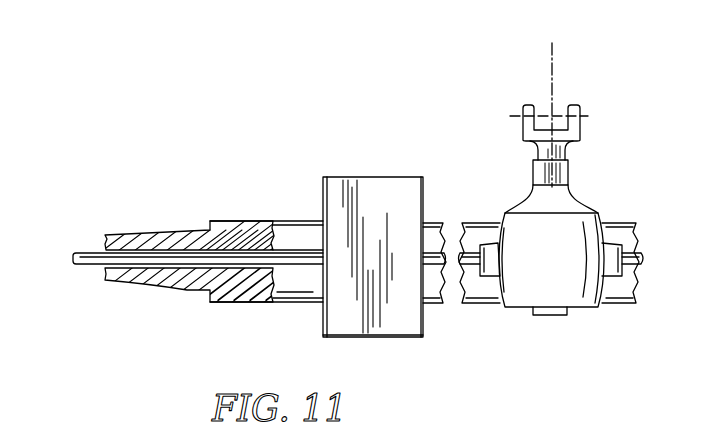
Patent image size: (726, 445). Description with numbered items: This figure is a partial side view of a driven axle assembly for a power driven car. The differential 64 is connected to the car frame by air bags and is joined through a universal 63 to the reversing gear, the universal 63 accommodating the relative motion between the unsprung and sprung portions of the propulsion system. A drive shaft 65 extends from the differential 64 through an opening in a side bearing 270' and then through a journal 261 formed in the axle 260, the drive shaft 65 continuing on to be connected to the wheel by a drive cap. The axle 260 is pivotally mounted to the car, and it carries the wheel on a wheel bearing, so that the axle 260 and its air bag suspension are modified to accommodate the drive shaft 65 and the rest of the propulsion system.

The journal 261 is at (190, 212).
The drive shaft 65 is at (290, 257).
The axle 260 is at (298, 300).
The side bearing 270' is at (394, 275).
The universal 63 is at (580, 140).
The differential 64 is at (533, 285).